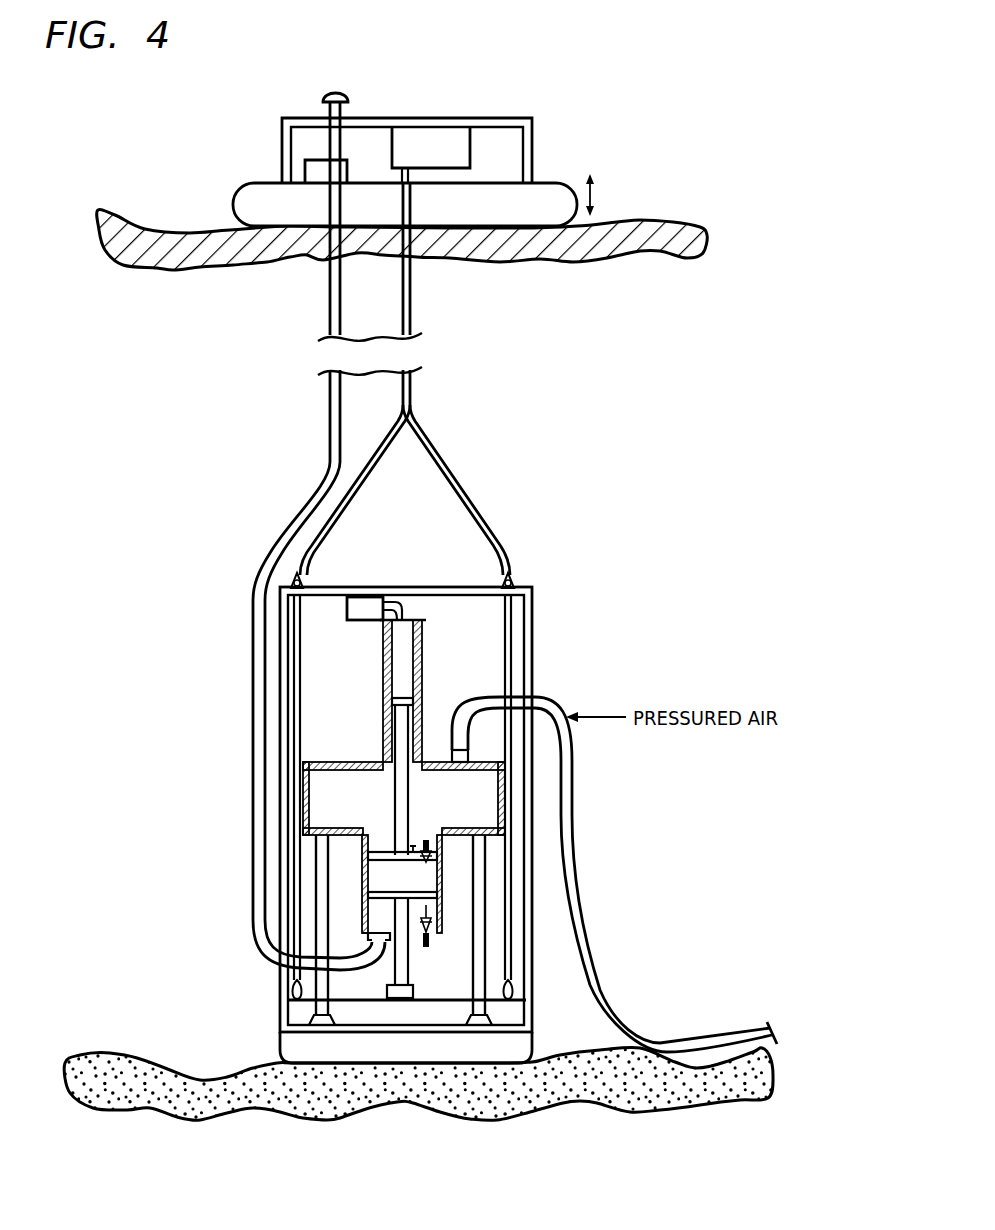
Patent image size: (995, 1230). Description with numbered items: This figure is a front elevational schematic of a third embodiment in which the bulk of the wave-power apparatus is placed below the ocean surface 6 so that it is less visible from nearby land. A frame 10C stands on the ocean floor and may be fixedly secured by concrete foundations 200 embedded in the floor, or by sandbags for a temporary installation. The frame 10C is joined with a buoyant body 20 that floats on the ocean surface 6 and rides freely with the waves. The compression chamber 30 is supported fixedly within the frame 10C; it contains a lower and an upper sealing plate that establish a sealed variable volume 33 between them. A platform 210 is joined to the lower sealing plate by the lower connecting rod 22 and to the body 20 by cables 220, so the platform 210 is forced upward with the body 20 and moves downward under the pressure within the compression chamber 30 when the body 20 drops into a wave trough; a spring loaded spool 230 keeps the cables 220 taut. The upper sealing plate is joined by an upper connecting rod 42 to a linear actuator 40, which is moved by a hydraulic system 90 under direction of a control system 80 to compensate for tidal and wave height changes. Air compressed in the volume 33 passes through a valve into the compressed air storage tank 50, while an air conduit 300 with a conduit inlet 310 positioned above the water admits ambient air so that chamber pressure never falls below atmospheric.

The ocean surface 6 is at (633, 221).
The buoyant body 20 is at (228, 190).
The control system 80 is at (298, 165).
The spring loaded spool 230 is at (475, 153).
The conduit inlet 310 is at (335, 90).
The air conduit 300 is at (331, 427).
The cables 220 is at (461, 485).
The frame 10C is at (530, 1014).
The concrete foundations 200 is at (288, 1042).
The platform 210 is at (347, 1002).
The hydraulic system 90 is at (360, 622).
The linear actuator 40 is at (424, 648).
The upper connecting rod 42 is at (400, 806).
The compressed air storage tank 50 is at (347, 758).
The sealed variable volume 33 is at (390, 871).
The compression chamber 30 is at (442, 914).
The lower connecting rod 22 is at (402, 968).